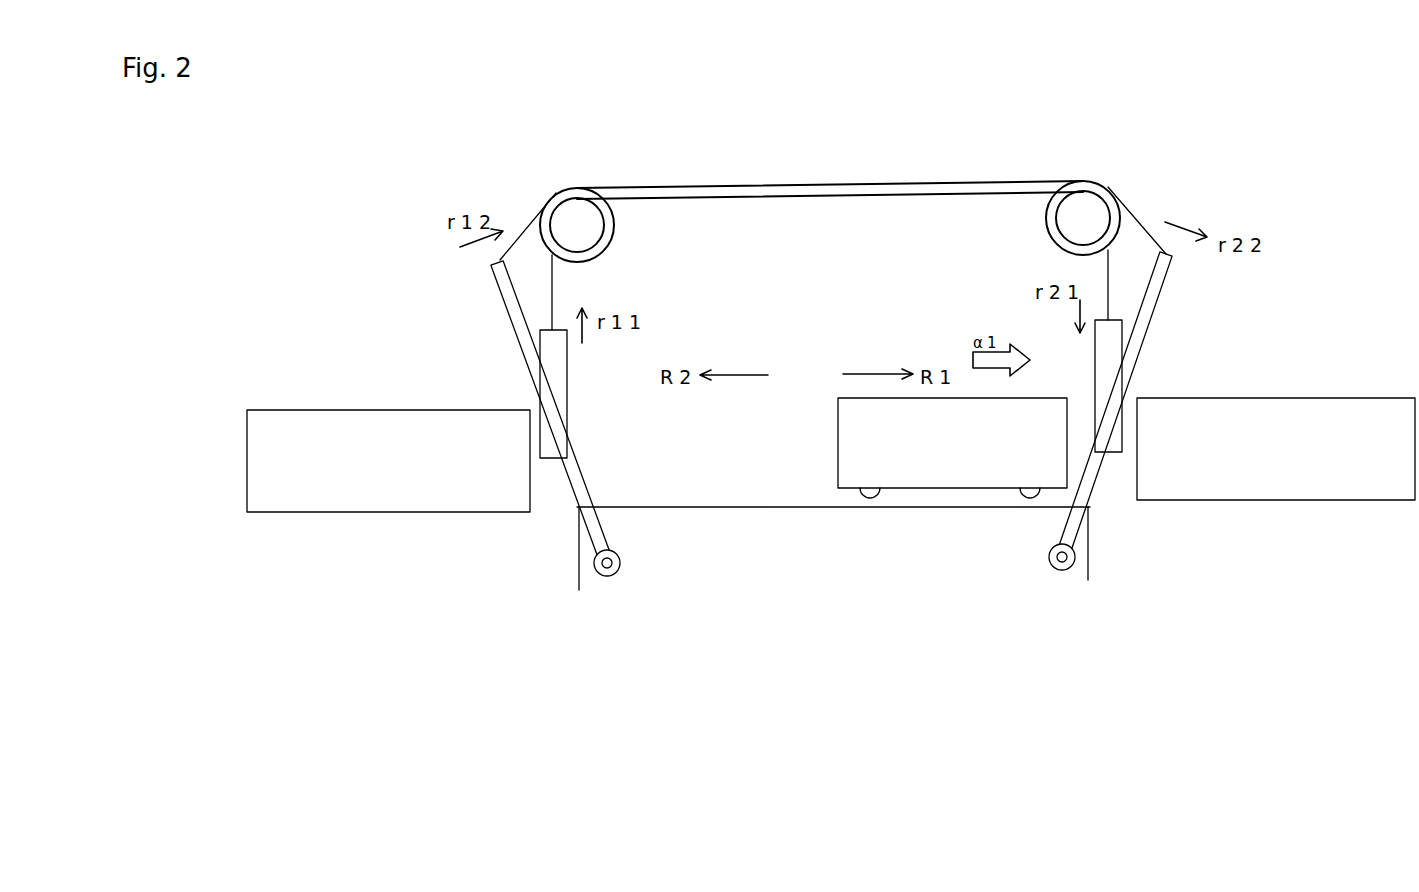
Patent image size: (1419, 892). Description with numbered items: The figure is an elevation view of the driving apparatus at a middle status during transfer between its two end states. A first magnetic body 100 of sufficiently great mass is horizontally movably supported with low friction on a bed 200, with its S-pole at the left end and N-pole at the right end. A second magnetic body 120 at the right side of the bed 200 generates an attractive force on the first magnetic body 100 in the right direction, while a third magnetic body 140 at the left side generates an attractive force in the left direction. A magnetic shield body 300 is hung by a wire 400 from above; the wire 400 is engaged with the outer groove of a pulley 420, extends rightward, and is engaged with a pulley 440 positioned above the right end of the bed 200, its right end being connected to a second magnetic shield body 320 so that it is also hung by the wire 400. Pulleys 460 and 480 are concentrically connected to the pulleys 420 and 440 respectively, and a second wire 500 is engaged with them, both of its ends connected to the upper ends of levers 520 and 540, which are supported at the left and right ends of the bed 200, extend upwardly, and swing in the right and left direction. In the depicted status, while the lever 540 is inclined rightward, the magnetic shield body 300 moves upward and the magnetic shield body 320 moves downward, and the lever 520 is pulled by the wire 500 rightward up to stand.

The first magnetic body 100 is at (915, 472).
The second magnetic body 120 is at (1380, 398).
The third magnetic body 140 is at (330, 410).
The bed 200 is at (807, 505).
The magnetic shield body 300 is at (548, 460).
The magnetic shield body 320 is at (1110, 353).
The wire 400 is at (905, 194).
The pulley 420 is at (598, 235).
The pulley 440 is at (1100, 211).
The pulley 460 is at (572, 190).
The pulley 480 is at (1110, 187).
The wire 500 is at (815, 186).
The lever 520 is at (527, 378).
The lever 540 is at (1092, 476).